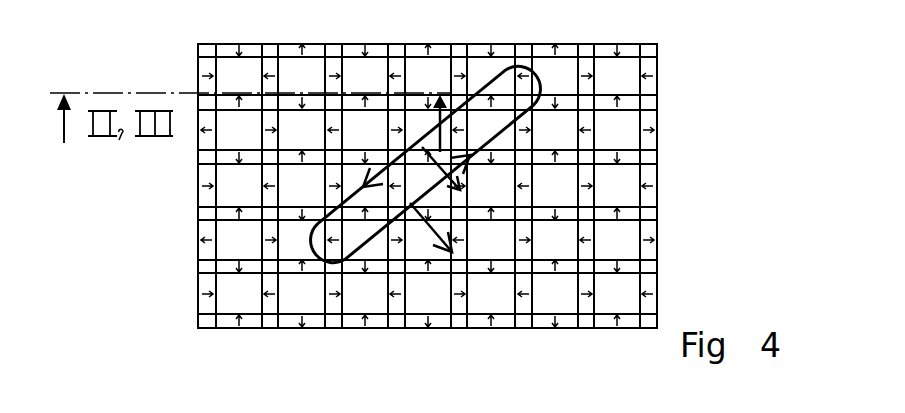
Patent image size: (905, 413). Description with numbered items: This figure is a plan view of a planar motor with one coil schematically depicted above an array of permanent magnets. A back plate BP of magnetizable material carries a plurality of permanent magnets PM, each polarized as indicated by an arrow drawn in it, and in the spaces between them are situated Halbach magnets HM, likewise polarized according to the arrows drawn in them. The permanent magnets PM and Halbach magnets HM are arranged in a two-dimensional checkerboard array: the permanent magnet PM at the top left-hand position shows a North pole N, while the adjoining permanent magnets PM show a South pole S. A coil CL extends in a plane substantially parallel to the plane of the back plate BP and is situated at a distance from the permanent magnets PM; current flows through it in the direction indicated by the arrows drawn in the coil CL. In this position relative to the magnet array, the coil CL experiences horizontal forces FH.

The back plate BP is at (198, 44).
The permanent magnets PM is at (633, 62).
The Halbach magnets HM is at (647, 118).
The coil CL is at (378, 240).
The horizontal forces FH is at (440, 258).